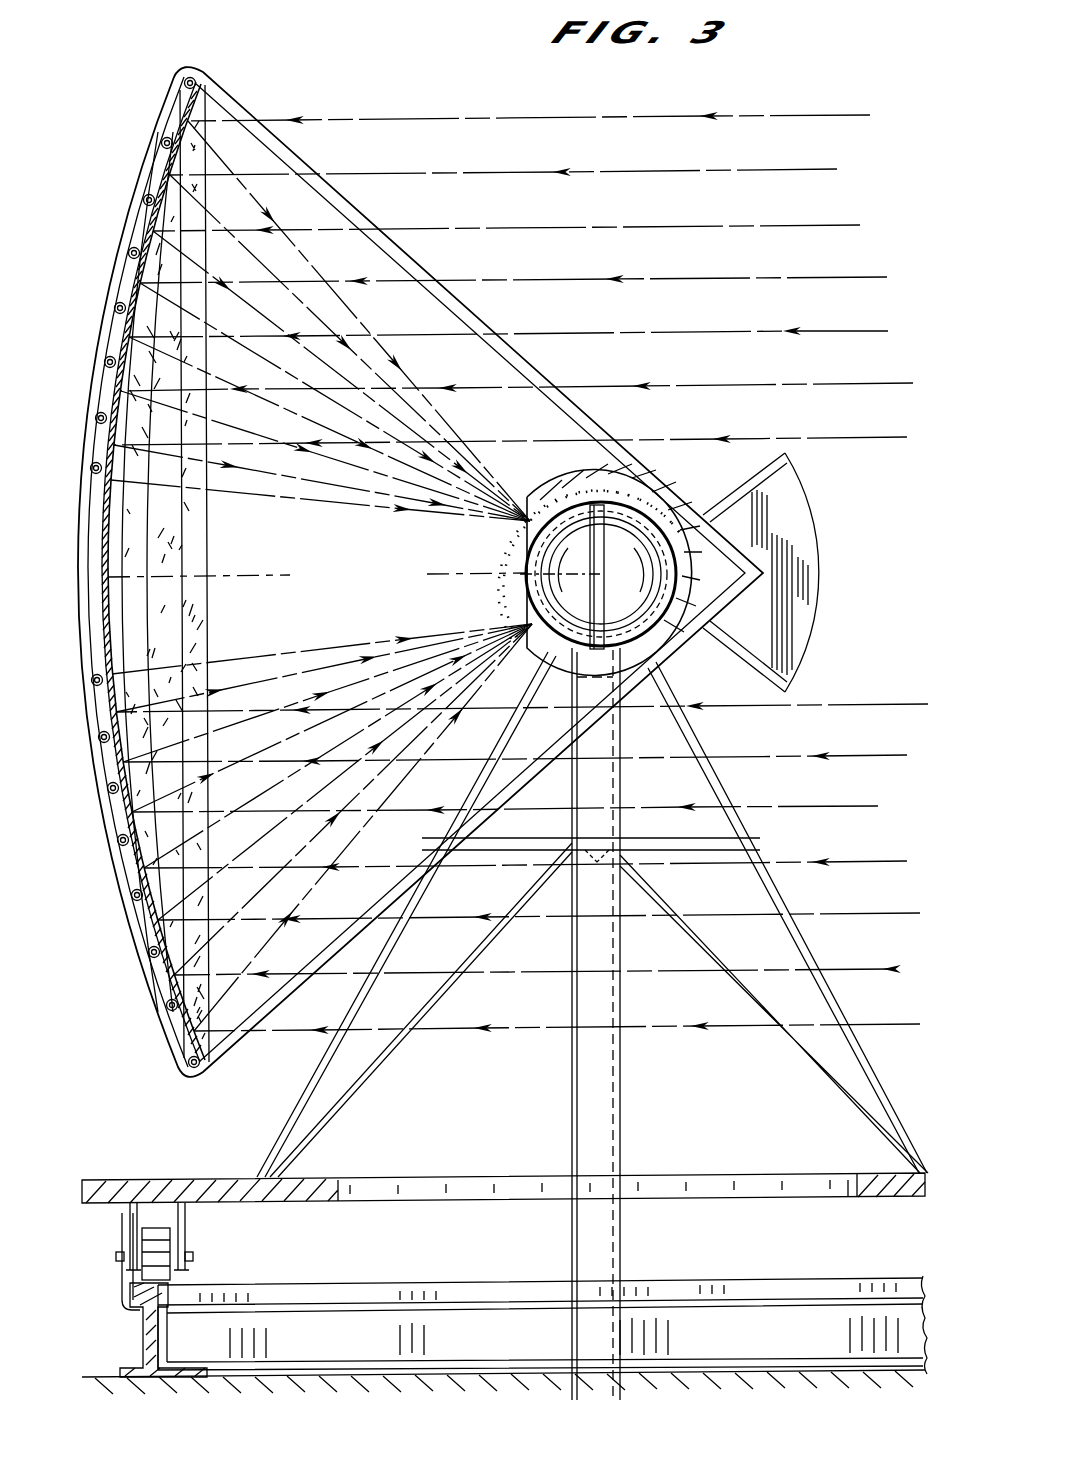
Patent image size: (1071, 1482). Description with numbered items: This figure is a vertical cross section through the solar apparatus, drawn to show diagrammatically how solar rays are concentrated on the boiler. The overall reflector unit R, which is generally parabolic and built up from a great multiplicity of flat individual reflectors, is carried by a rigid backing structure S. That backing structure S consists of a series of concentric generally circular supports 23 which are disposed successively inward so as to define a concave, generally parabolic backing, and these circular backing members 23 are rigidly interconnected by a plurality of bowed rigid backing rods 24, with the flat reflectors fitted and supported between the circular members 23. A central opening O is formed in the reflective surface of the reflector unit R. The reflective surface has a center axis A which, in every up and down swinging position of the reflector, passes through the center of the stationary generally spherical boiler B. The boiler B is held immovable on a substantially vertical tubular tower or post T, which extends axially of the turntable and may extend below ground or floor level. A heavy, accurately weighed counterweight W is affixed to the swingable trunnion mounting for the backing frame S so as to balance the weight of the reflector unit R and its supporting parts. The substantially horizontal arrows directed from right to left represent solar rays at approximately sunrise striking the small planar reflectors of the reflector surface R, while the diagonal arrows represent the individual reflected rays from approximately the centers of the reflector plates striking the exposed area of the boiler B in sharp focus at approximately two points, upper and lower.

The rigid backing structure S is at (138, 176).
The bowed rigid backing rods 24 is at (103, 328).
The central opening O is at (108, 557).
The concentric generally circular supports 23 is at (92, 683).
The reflector unit R is at (138, 963).
The center axis A is at (285, 566).
The boiler B is at (512, 595).
The counterweight W is at (797, 512).
The tubular tower T is at (568, 1105).